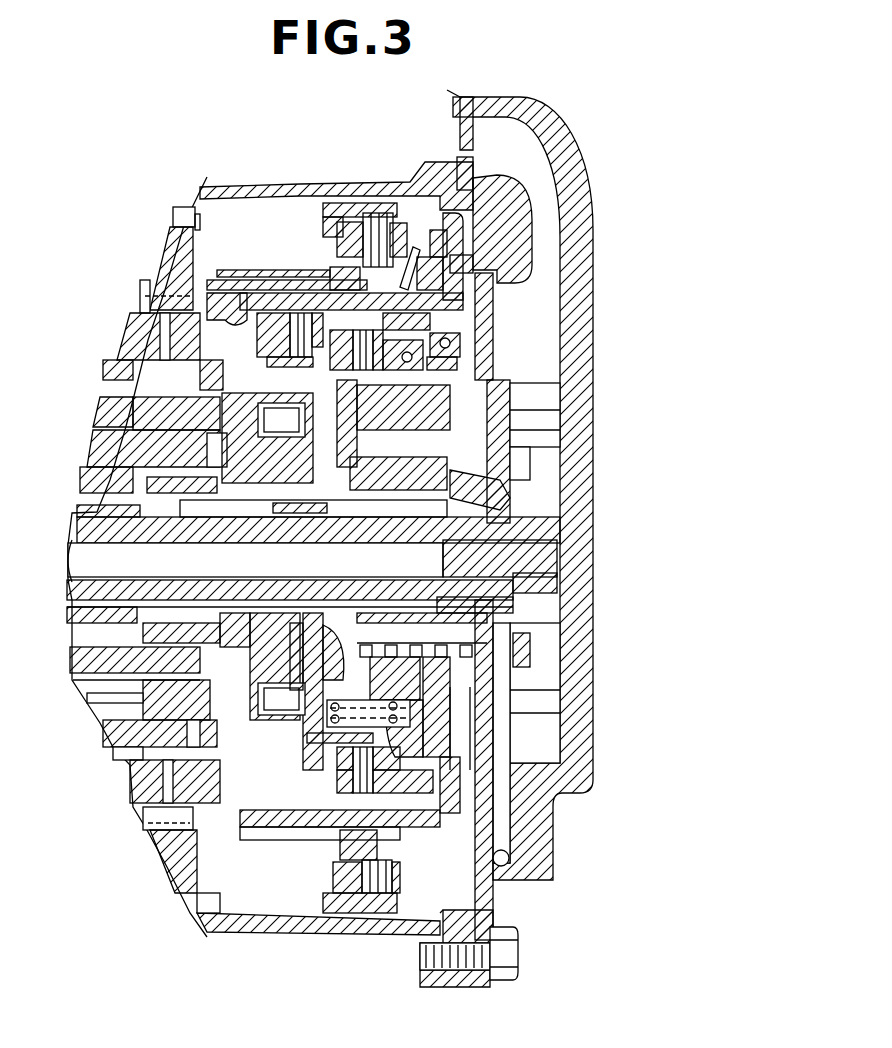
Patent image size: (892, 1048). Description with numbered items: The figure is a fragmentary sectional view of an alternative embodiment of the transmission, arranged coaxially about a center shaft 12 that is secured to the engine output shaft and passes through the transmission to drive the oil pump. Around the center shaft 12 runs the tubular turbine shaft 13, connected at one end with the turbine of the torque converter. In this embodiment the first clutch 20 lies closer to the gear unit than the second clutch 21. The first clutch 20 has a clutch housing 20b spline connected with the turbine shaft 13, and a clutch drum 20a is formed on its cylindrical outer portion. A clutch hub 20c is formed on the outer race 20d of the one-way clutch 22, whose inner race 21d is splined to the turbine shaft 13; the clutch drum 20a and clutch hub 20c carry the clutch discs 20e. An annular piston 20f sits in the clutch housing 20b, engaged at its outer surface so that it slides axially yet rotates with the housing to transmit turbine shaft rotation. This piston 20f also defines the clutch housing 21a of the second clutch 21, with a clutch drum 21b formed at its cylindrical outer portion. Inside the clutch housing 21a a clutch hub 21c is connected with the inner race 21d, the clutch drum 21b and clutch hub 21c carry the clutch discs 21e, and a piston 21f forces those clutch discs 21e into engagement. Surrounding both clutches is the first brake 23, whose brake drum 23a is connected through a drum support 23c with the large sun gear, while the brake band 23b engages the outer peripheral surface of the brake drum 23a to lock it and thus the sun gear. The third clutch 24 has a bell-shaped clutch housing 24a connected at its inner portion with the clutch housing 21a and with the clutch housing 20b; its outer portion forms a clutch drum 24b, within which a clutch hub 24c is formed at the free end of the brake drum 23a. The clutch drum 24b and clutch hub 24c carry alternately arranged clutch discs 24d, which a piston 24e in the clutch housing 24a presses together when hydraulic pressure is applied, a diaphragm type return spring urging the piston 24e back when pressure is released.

The center shaft 12 is at (75, 548).
The turbine shaft 13 is at (118, 528).
The first clutch 20 is at (245, 352).
The clutch drum 20a is at (250, 345).
The clutch housing 20b is at (432, 368).
The clutch hub 20c is at (207, 400).
The outer race 20d is at (206, 433).
The clutch discs 20e is at (215, 378).
The annular piston 20f is at (457, 320).
The second clutch 21 is at (400, 412).
The clutch housing 21a is at (398, 480).
The clutch drum 21b is at (345, 330).
The clutch hub 21c is at (440, 570).
The inner race 21d is at (362, 570).
The clutch discs 21e is at (440, 350).
The piston 21f is at (470, 407).
The one-way clutch 22 is at (283, 437).
The first brake 23 is at (213, 262).
The brake drum 23a is at (262, 282).
The brake band 23b is at (233, 268).
The drum support 23c is at (238, 318).
The third clutch 24 is at (357, 183).
The clutch housing 24a is at (492, 222).
The clutch drum 24b is at (330, 206).
The clutch hub 24c is at (477, 177).
The clutch discs 24d is at (388, 210).
The piston 24e is at (470, 268).